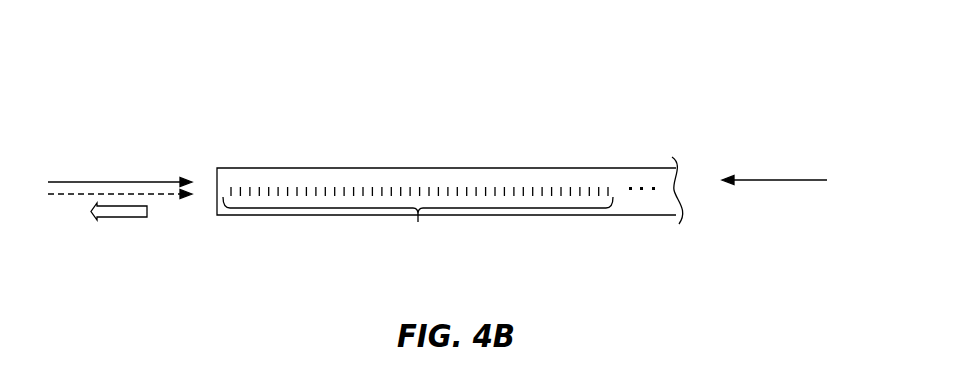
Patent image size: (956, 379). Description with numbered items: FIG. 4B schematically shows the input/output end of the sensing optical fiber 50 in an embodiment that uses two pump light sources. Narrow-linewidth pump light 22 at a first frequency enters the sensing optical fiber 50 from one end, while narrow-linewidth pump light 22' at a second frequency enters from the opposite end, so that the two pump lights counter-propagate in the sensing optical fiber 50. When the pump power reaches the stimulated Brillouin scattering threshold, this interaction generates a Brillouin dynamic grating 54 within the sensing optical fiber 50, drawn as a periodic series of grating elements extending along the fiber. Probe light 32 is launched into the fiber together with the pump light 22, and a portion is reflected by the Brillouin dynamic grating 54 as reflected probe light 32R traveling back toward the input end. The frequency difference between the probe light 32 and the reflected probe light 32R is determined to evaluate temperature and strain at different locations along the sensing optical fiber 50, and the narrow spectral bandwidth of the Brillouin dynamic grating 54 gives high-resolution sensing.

The pump light 22 is at (120, 146).
The probe light 32 is at (90, 195).
The reflected probe light 32R is at (123, 218).
The sensing optical fiber 50 is at (588, 167).
The Brillouin dynamic grating 54 is at (418, 223).
The pump light 22' is at (774, 152).